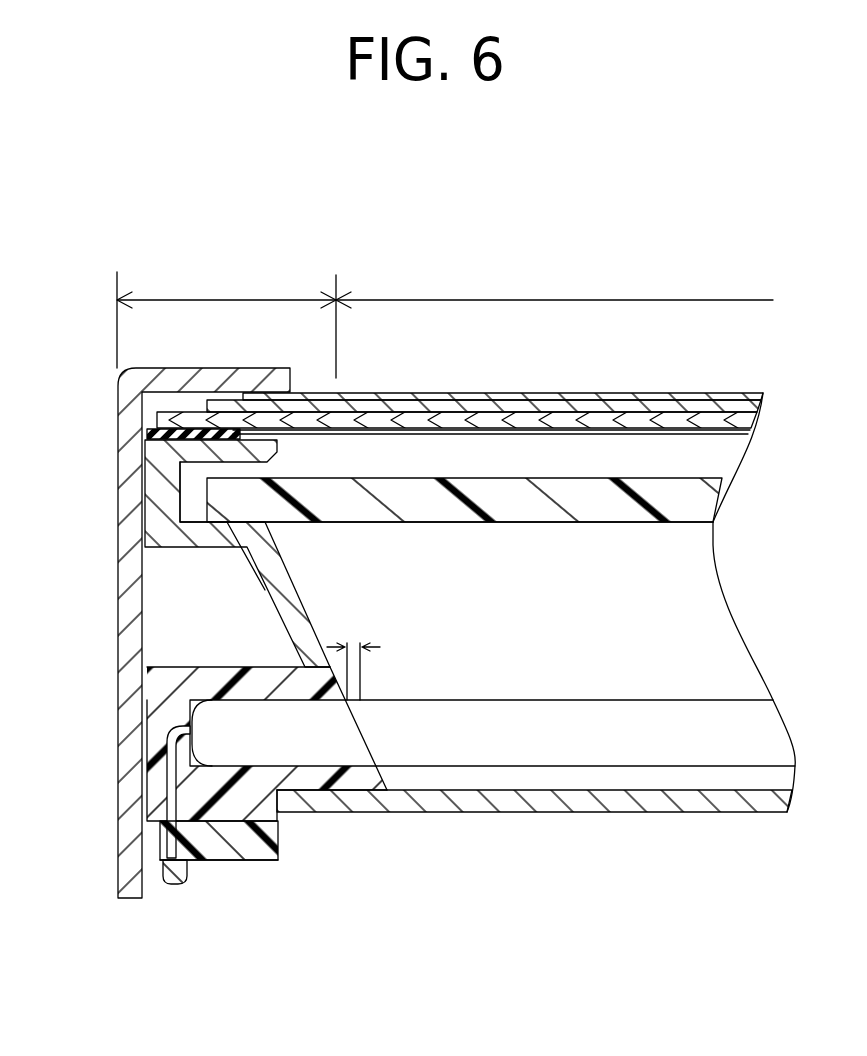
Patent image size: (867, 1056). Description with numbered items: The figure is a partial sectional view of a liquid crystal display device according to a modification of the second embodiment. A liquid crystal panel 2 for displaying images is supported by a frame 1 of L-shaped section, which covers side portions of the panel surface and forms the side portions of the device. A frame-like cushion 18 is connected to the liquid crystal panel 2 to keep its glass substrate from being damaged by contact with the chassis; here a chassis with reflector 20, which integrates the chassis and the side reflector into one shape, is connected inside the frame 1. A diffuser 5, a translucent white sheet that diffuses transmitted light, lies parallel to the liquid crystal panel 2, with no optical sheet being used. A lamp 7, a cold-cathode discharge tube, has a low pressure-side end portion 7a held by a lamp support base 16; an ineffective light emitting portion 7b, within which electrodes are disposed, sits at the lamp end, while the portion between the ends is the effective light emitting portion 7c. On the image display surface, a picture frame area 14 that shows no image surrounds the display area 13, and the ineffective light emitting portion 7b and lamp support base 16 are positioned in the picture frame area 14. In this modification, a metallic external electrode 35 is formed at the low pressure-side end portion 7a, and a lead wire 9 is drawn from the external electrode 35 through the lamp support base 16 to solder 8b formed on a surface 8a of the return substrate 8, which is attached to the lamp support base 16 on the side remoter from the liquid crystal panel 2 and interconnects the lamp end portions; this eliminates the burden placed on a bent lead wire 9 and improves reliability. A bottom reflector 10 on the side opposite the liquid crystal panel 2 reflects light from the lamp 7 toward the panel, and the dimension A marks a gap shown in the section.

The frame 1 is at (130, 493).
The liquid crystal panel 2 is at (721, 406).
The diffuser 5 is at (688, 510).
The lamp 7 is at (426, 766).
The low pressure-side end portion 7a is at (225, 665).
The ineffective light emitting portion 7b is at (343, 742).
The effective light emitting portion 7c is at (487, 730).
The return substrate 8 is at (258, 843).
The surface of the return substrate 8a is at (255, 860).
The solder 8b is at (185, 862).
The lead wire 9 is at (175, 788).
The bottom reflector 10 is at (670, 795).
The display area 13 is at (505, 300).
The picture frame area 14 is at (225, 300).
The lamp support base 16 is at (175, 688).
The cushion 18 is at (172, 436).
The chassis with reflector 20 is at (262, 575).
The external electrode 35 is at (195, 715).
The gap dimension A is at (353, 655).